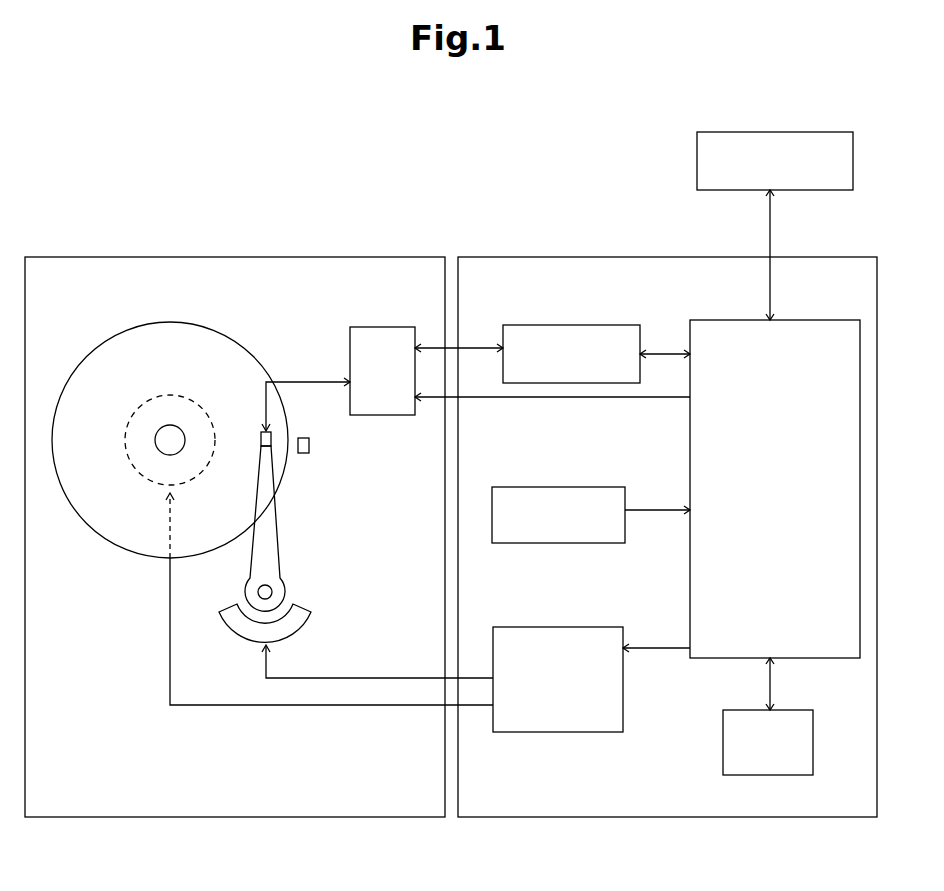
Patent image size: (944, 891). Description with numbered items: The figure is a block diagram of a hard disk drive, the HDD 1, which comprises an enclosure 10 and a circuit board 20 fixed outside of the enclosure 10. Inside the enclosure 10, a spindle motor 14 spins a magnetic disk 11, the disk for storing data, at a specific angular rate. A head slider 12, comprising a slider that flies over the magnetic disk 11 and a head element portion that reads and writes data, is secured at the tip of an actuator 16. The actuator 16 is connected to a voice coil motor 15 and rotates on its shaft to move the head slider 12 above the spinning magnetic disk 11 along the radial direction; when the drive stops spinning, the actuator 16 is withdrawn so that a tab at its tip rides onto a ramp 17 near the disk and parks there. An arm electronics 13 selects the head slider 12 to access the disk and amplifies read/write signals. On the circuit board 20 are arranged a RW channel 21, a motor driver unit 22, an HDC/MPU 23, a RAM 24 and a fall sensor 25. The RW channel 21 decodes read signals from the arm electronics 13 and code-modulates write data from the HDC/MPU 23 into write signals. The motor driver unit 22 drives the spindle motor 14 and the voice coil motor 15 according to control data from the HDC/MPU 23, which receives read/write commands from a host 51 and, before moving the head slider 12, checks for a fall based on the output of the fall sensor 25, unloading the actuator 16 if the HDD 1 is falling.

The HDD 1 is at (534, 247).
The enclosure 10 is at (230, 257).
The magnetic disk 11 is at (94, 530).
The head slider 12 is at (261, 446).
The arm electronics 13 is at (379, 327).
The spindle motor 14 is at (196, 408).
The voice coil motor 15 is at (306, 612).
The actuator 16 is at (280, 550).
The ramp 17 is at (310, 450).
The circuit board 20 is at (672, 257).
The RW channel 21 is at (584, 325).
The motor driver unit 22 is at (600, 627).
The HDC/MPU 23 is at (800, 320).
The RAM 24 is at (723, 745).
The fall sensor 25 is at (605, 487).
The host 51 is at (780, 132).